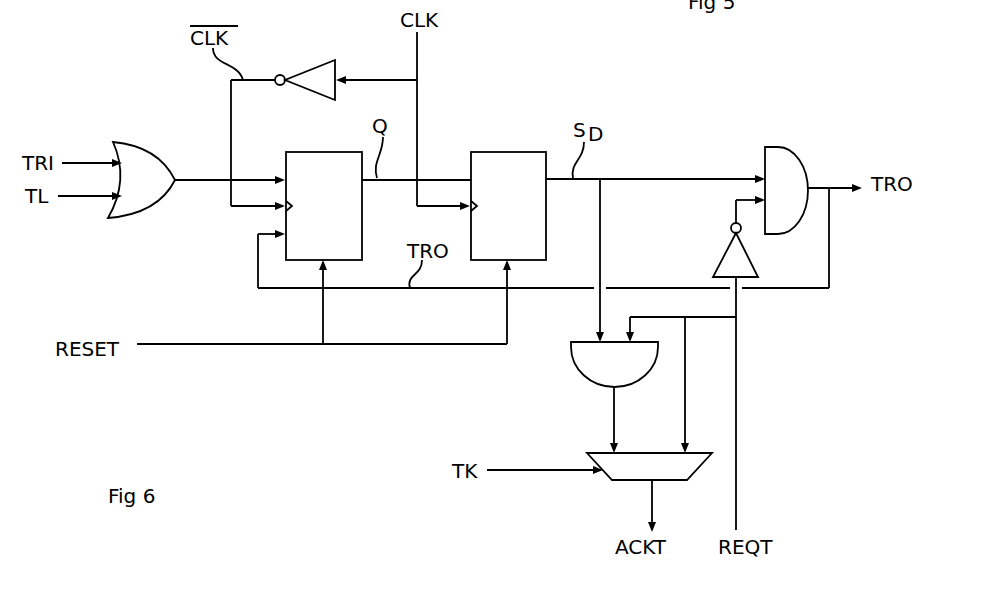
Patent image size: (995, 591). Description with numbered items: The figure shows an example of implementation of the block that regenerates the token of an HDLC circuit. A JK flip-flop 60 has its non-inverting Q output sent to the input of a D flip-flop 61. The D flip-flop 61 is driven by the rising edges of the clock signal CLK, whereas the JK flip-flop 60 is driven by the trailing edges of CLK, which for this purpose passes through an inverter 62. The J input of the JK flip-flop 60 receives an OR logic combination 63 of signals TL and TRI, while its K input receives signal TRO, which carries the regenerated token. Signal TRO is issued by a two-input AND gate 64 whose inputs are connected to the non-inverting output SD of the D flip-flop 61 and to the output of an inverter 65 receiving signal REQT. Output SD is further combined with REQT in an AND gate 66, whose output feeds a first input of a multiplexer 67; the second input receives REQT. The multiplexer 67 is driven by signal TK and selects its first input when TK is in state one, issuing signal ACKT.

The JK flip-flop 60 is at (362, 244).
The D flip-flop 61 is at (508, 152).
The inverter 62 is at (298, 72).
The OR logic combination 63 is at (152, 142).
The two-input AND gate 64 is at (798, 154).
The inverter 65 is at (748, 254).
The AND gate 66 is at (573, 363).
The multiplexer 67 is at (700, 468).